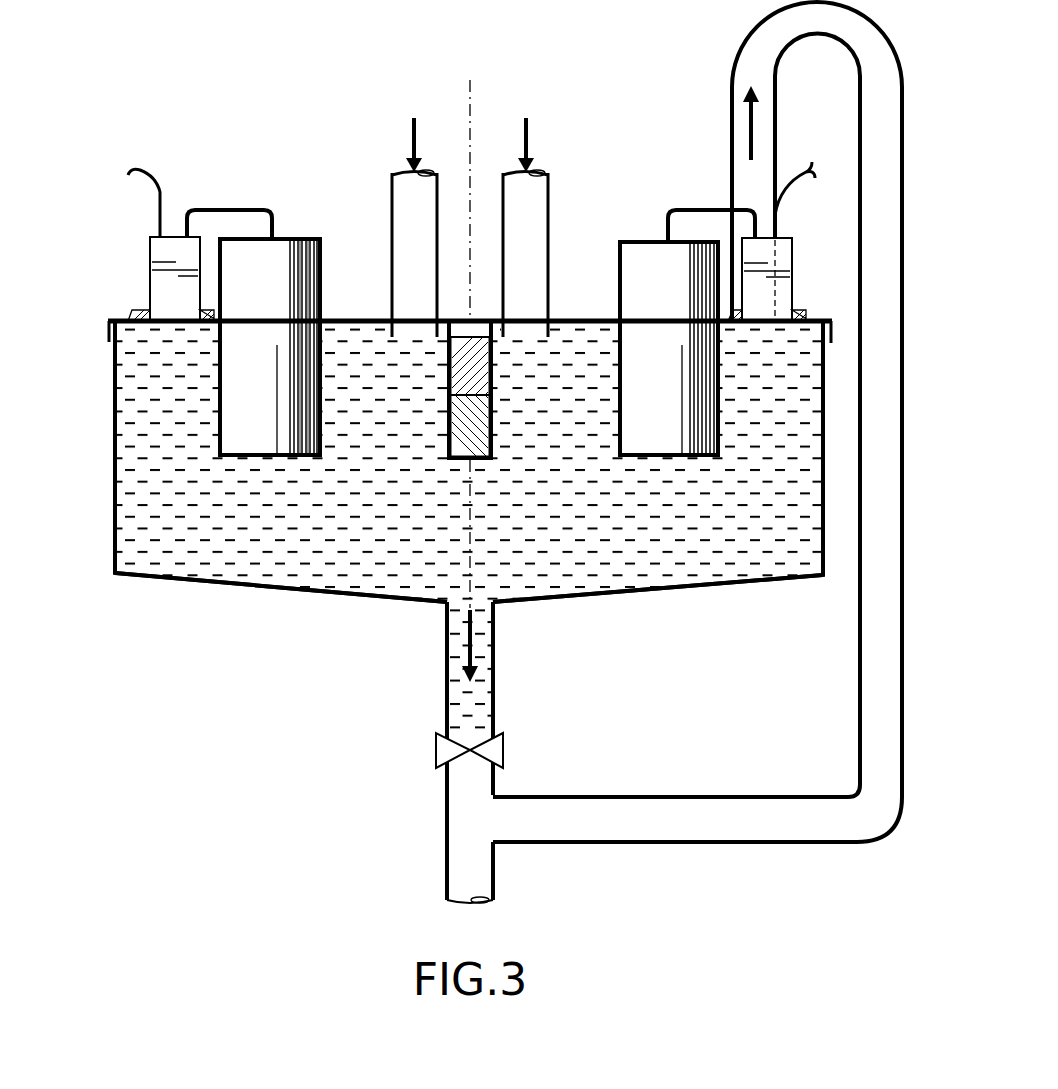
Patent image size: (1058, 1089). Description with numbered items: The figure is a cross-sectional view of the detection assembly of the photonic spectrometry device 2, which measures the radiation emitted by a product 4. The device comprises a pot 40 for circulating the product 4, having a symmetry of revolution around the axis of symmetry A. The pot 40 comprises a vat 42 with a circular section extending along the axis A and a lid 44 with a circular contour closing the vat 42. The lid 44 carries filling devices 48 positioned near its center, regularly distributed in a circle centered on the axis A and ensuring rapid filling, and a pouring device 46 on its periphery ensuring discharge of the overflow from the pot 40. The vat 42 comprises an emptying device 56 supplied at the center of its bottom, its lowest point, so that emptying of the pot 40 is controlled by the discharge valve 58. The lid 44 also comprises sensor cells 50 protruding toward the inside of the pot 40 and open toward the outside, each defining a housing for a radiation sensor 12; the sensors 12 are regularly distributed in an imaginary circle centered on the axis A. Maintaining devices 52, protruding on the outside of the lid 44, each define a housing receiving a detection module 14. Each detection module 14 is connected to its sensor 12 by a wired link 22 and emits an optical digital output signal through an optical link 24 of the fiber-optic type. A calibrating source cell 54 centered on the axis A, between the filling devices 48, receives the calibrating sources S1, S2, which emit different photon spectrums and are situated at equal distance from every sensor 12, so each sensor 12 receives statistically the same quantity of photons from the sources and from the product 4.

The photonic spectrometry device 2 is at (72, 381).
The product 4 is at (777, 548).
The radiation sensor 12 is at (318, 258).
The detection module 14 is at (160, 250).
The wired link 22 is at (226, 207).
The optical link 24 is at (157, 190).
The pot 40 is at (100, 449).
The vat 42 is at (143, 580).
The lid 44 is at (120, 316).
The pouring device 46 is at (732, 93).
The filling device 48 is at (397, 188).
The sensor cell 50 is at (255, 458).
The maintaining device 52 is at (138, 307).
The calibrating source cell 54 is at (455, 462).
The emptying device 56 is at (485, 703).
The discharge valve 58 is at (498, 752).
The axis of symmetry A is at (480, 335).
The first calibrating source S1 is at (452, 420).
The second calibrating source S2 is at (490, 358).